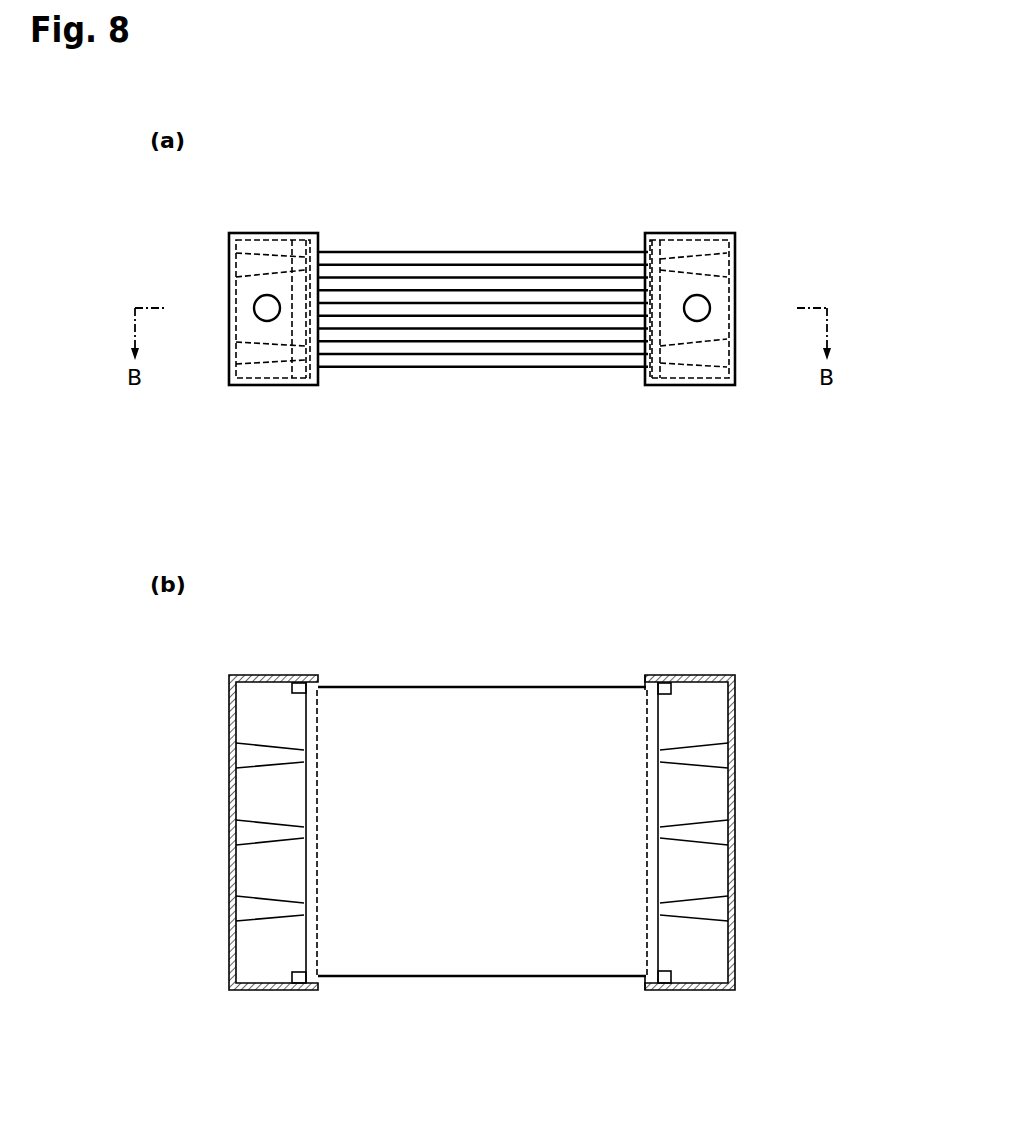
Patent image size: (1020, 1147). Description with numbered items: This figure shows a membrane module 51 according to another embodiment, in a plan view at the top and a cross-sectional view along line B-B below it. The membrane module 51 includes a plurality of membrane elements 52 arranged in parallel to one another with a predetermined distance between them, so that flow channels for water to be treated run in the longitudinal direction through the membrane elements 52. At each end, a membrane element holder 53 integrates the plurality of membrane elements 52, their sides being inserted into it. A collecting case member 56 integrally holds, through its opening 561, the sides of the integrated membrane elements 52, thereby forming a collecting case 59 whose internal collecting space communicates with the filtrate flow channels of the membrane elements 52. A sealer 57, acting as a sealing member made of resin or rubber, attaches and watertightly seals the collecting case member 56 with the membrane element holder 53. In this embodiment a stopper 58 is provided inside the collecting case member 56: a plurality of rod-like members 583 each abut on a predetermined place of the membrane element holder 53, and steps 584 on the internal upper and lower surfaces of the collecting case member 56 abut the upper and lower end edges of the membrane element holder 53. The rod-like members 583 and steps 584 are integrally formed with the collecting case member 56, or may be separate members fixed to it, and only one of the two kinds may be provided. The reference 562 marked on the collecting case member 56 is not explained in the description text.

The membrane module 51 is at (508, 232).
The membrane element 52 is at (432, 362).
The collecting case member 56 is at (681, 233).
The collecting case 59 is at (728, 218).
The opening 561 is at (645, 688).
The holder hole 562 is at (699, 308).
The step 584 is at (656, 708).
The rod-like member 583 is at (720, 757).
The stopper 58 is at (822, 705).
The membrane element holder 53 is at (662, 868).
The sealer 57 is at (646, 982).